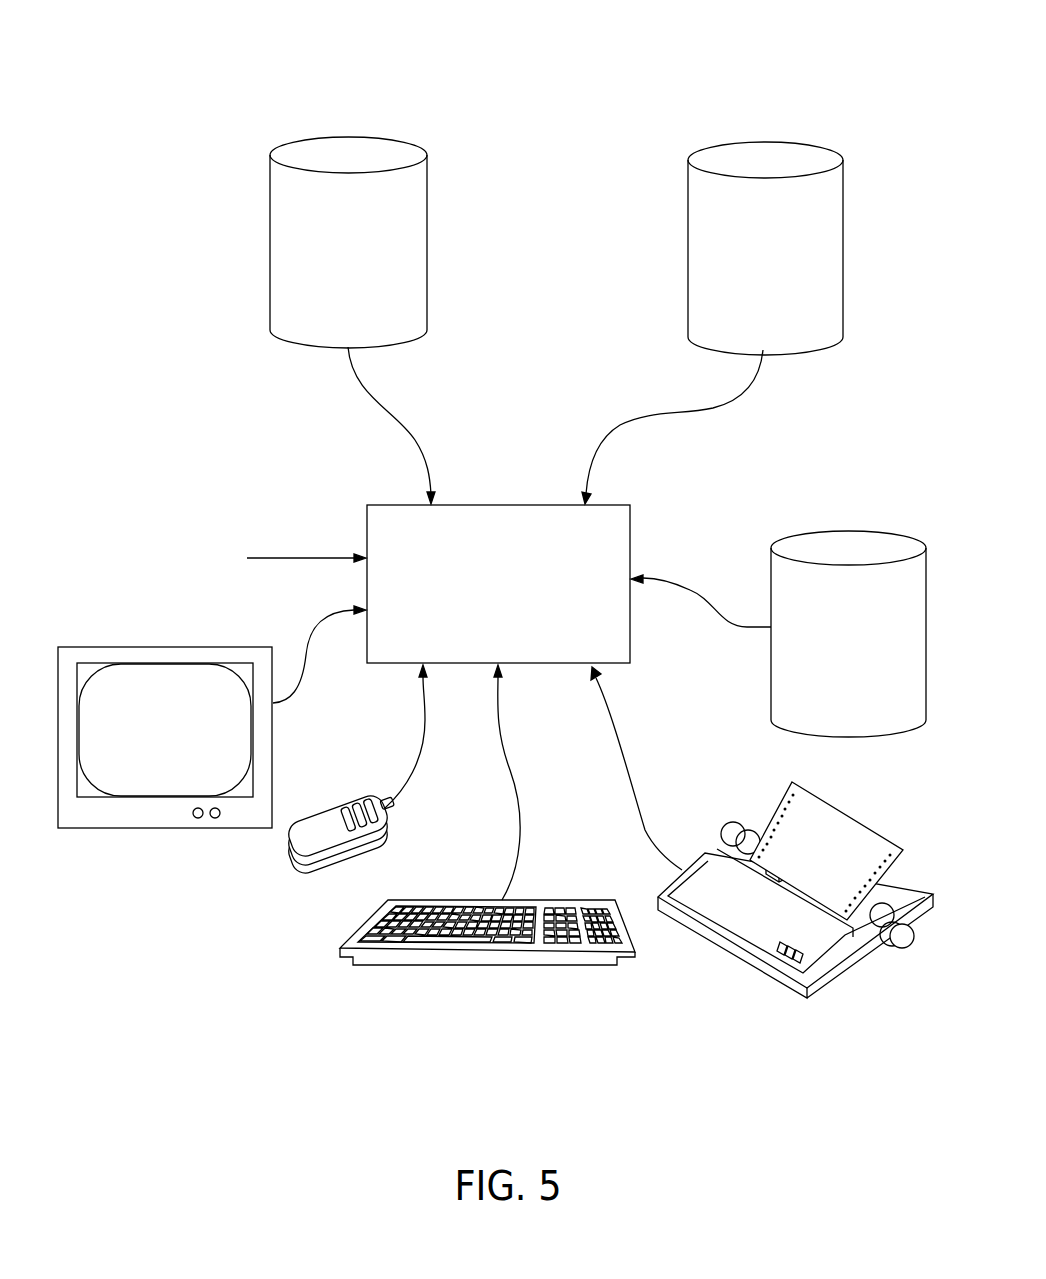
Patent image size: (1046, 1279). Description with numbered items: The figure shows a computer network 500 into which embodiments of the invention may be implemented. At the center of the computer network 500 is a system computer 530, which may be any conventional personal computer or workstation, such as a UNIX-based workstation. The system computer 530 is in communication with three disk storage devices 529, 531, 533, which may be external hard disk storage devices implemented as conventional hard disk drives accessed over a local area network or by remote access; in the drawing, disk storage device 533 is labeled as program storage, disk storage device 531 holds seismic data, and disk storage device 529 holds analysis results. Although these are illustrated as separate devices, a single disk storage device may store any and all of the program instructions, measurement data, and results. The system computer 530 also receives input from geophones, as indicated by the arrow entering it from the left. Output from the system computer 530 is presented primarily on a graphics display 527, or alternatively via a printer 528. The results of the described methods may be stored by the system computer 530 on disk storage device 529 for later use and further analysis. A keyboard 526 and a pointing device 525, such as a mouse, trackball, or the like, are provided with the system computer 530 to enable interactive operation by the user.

The computer network 500 is at (272, 47).
The disk storage device 533 is at (342, 136).
The disk storage device 531 is at (766, 142).
The system computer 530 is at (493, 505).
The disk storage device 529 is at (848, 530).
The graphics display 527 is at (137, 830).
The pointing device 525 is at (303, 862).
The keyboard 526 is at (492, 968).
The printer 528 is at (870, 965).